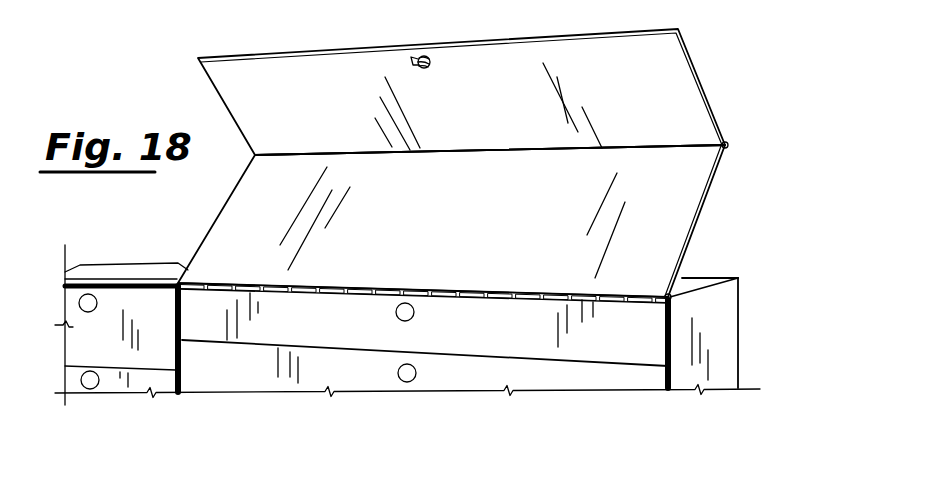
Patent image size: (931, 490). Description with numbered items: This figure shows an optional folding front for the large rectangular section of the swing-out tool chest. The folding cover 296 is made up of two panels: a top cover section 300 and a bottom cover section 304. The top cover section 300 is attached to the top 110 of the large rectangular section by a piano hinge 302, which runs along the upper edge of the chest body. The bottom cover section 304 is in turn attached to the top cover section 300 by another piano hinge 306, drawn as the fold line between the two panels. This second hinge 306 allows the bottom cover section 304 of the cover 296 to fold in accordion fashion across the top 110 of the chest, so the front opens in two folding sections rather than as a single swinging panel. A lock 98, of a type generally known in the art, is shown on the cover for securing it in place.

The lock 98 is at (432, 62).
The top 110 is at (707, 277).
The cover 296 is at (749, 150).
The top cover section 300 is at (486, 225).
The piano hinge 302 is at (500, 288).
The bottom cover section 304 is at (507, 123).
The piano hinge 306 is at (532, 152).